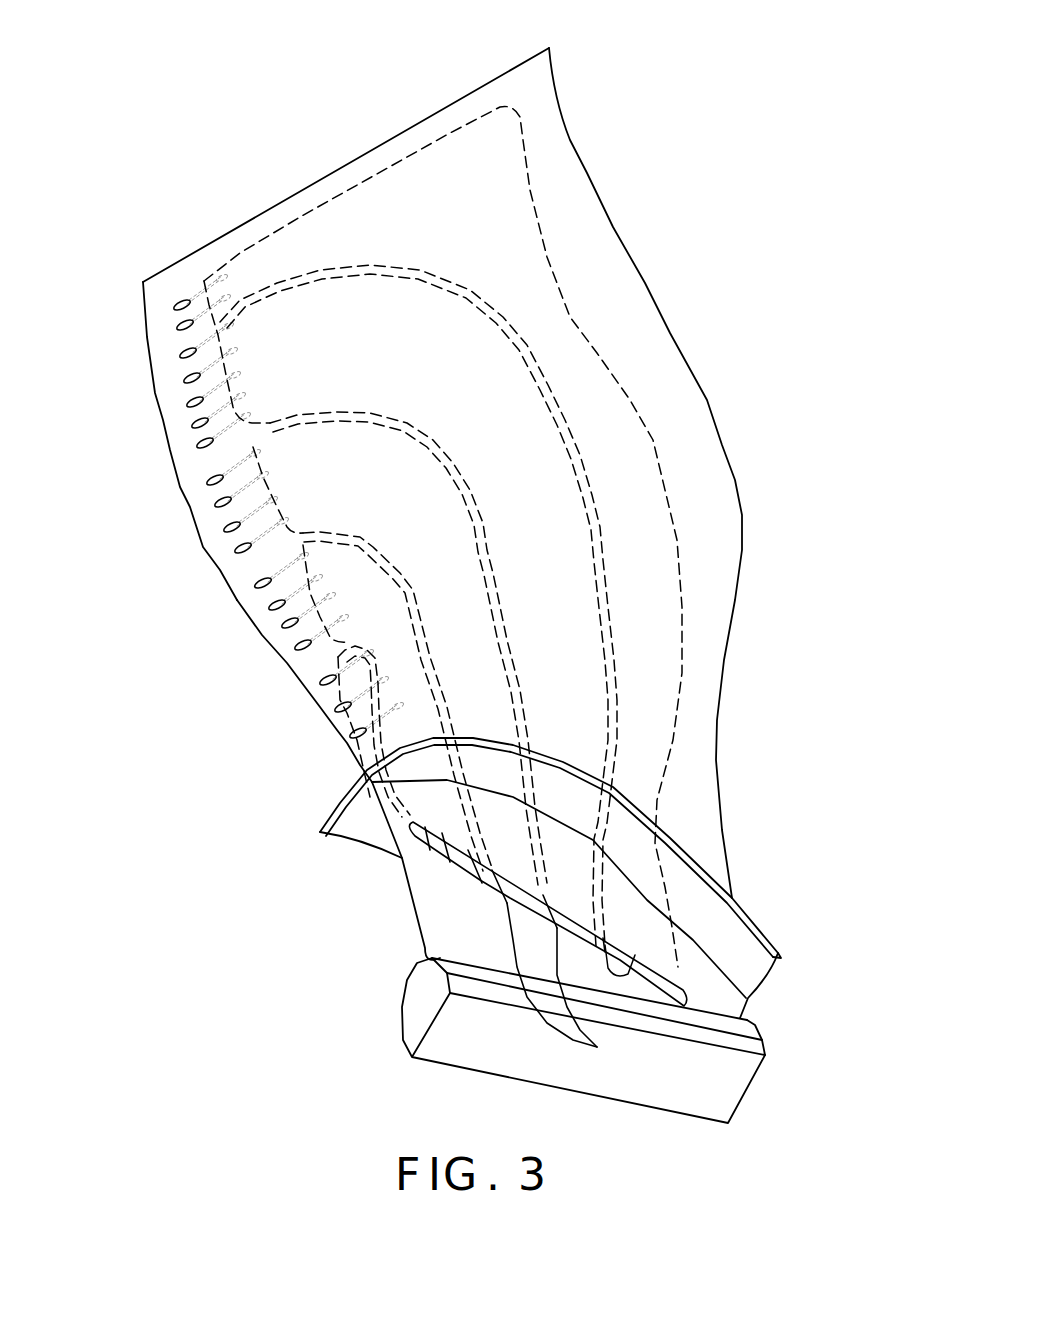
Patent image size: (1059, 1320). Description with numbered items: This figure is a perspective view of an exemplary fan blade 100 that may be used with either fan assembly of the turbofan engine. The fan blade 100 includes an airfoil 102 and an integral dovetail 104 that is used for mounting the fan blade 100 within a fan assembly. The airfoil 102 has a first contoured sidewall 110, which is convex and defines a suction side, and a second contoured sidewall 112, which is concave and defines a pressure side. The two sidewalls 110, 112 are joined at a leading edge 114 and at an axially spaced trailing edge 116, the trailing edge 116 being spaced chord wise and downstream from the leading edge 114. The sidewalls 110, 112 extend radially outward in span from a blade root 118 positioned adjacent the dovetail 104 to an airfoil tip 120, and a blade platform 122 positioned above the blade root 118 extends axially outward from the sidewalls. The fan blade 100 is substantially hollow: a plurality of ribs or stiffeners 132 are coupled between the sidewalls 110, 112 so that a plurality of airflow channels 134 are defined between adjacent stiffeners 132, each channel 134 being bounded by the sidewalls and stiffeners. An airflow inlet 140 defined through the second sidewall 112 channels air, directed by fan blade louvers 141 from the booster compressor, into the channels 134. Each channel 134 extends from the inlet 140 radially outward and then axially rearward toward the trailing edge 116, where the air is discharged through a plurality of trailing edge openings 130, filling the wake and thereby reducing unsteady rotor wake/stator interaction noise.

The fan blade 100 is at (605, 52).
The airfoil 102 is at (645, 283).
The dovetail 104 is at (408, 992).
The first contoured sidewall 110 is at (156, 395).
The second contoured sidewall 112 is at (192, 460).
The leading edge 114 is at (743, 513).
The trailing edge 116 is at (283, 660).
The blade root 118 is at (424, 947).
The airfoil tip 120 is at (336, 170).
The blade platform 122 is at (781, 956).
The trailing edge openings 130 is at (182, 302).
The ribs or stiffeners 132 is at (420, 266).
The airflow channels 134 is at (416, 367).
The airflow inlet 140 is at (648, 1000).
The fan blade louvers 141 is at (597, 1047).